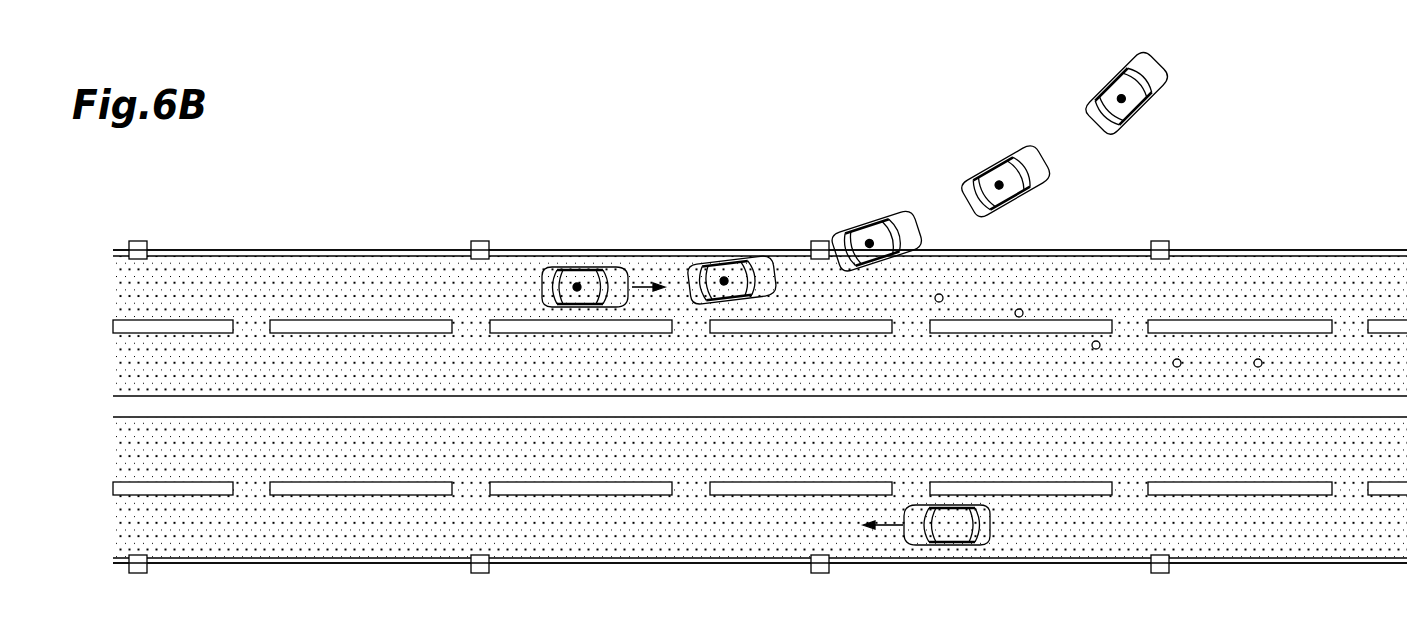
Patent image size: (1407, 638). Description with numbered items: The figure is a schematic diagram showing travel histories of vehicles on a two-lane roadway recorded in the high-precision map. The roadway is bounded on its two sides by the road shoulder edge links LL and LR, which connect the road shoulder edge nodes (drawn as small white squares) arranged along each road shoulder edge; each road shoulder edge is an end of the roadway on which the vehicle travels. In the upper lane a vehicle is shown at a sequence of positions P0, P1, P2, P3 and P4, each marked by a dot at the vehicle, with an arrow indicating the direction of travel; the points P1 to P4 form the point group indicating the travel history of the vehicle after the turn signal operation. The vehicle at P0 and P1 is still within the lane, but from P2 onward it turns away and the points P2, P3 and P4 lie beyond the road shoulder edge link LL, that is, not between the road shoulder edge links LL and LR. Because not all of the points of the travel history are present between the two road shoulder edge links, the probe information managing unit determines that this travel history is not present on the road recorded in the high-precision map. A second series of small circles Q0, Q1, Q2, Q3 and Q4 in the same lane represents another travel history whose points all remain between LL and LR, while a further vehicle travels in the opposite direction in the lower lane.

The host vehicle position at time 0 P0 is at (577, 283).
The point of the point group indicating the travel history of the vehicle P1 is at (723, 275).
The point of the point group indicating the travel history of the vehicle P2 is at (867, 238).
The point of the point group indicating the travel history of the vehicle P3 is at (998, 179).
The point of the point group indicating the travel history of the vehicle P4 is at (1119, 95).
The target point at time 0 Q0 is at (939, 302).
The target point at time 1 Q1 is at (1019, 317).
The target point at time 2 Q2 is at (1098, 349).
The target point at time 3 Q3 is at (1179, 367).
The target point at time 4 Q4 is at (1260, 367).
The road shoulder edge link LL is at (316, 250).
The road shoulder edge link LR is at (332, 563).